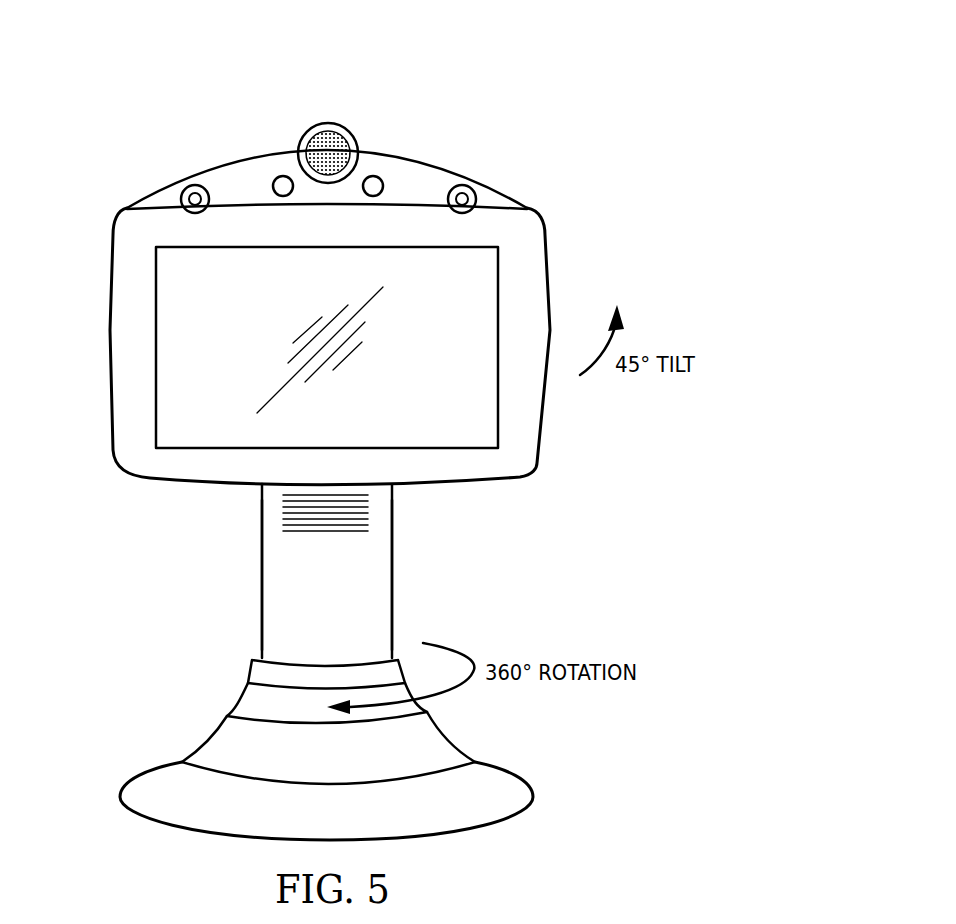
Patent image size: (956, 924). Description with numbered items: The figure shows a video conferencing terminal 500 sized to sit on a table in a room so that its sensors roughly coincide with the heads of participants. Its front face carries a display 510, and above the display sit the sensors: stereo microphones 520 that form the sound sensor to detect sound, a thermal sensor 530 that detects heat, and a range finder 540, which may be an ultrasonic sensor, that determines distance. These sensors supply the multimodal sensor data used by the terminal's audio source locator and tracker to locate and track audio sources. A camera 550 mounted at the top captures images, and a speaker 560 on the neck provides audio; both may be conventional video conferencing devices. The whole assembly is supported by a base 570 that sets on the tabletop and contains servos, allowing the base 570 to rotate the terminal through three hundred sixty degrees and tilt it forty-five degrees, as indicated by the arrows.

The video conferencing terminal 500 is at (592, 63).
The display 510 is at (175, 342).
The microphones 520 is at (192, 185).
The thermal sensor 530 is at (283, 176).
The range finder 540 is at (373, 176).
The camera 550 is at (329, 123).
The speaker 560 is at (373, 512).
The base 570 is at (262, 568).